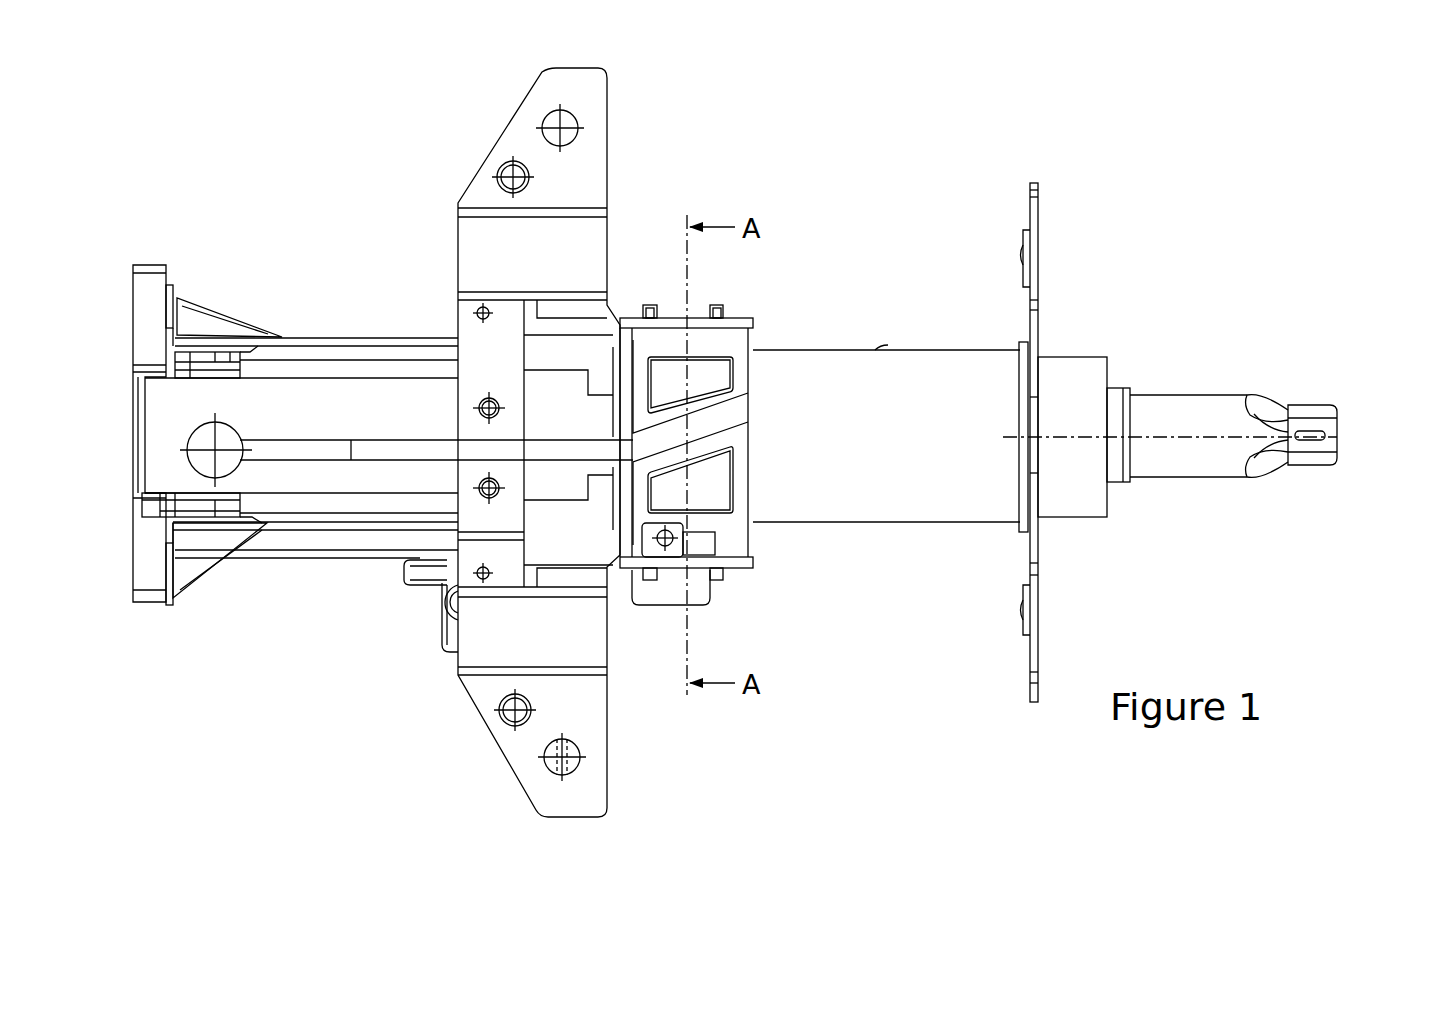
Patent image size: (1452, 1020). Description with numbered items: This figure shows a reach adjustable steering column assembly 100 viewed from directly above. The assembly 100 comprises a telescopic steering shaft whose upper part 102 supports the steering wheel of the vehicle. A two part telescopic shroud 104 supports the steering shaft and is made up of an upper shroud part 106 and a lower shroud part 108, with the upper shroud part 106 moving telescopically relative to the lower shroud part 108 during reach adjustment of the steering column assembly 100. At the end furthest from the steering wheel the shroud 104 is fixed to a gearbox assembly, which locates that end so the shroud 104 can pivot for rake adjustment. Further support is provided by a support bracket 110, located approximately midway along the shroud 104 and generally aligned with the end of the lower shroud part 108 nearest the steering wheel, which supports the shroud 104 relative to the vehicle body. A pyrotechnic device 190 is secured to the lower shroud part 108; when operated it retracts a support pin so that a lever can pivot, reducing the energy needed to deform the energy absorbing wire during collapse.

The steering column assembly 100 is at (1270, 228).
The upper part of the steering shaft 102 is at (1325, 402).
The telescopic shroud 104 is at (842, 672).
The upper shroud part 106 is at (1080, 355).
The lower shroud part 108 is at (345, 337).
The support bracket 110 is at (605, 128).
The pyrotechnic device 190 is at (442, 627).